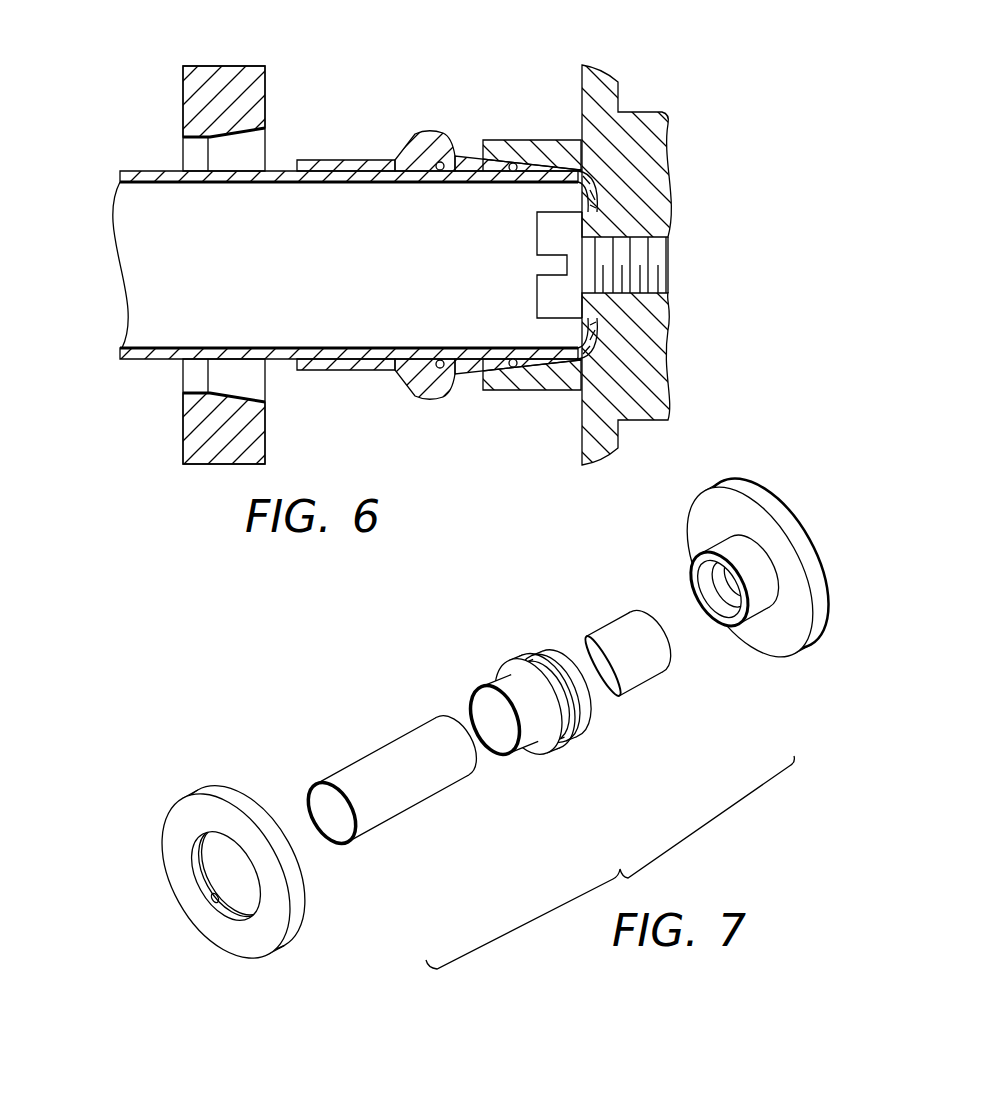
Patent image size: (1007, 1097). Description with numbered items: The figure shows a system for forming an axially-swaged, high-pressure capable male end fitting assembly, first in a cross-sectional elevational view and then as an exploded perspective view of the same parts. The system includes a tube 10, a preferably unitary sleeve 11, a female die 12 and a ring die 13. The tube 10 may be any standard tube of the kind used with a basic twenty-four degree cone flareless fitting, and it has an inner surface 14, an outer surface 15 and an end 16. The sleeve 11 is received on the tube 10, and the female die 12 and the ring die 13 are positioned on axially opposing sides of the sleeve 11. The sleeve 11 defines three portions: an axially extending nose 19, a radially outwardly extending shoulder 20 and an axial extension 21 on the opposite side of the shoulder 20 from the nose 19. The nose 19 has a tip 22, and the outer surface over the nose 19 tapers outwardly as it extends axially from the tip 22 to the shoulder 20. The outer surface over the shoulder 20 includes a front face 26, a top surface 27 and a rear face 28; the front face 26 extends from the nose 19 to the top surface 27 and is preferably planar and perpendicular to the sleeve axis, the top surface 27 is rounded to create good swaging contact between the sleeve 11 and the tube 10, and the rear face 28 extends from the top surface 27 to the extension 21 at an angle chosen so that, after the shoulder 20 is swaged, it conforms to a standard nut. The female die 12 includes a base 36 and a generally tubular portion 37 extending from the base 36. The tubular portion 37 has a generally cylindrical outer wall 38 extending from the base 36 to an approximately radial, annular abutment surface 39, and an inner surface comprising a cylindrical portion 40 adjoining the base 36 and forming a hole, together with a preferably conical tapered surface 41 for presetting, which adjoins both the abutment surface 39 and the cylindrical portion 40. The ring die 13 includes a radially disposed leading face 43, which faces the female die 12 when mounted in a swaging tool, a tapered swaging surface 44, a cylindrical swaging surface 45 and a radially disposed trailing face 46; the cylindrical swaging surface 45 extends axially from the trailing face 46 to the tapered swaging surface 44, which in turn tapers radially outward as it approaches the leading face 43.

In FIG. 6, the tube 10 is at (106, 215).
In FIG. 7, the tube 10 is at (398, 818).
In FIG. 6, the sleeve 11 is at (400, 150).
In FIG. 7, the sleeve 11 is at (536, 757).
In FIG. 6, the female die 12 is at (655, 104).
In FIG. 7, the female die 12 is at (708, 492).
In FIG. 6, the ring die 13 is at (214, 60).
In FIG. 7, the ring die 13 is at (181, 780).
In FIG. 6, the inner surface 14 is at (150, 346).
In FIG. 7, the inner surface 14 is at (315, 802).
In FIG. 6, the outer surface 15 is at (152, 362).
In FIG. 7, the outer surface 15 is at (386, 747).
In FIG. 6, the end 16 is at (572, 198).
In FIG. 7, the end 16 is at (652, 605).
In FIG. 6, the nose 19 is at (466, 160).
In FIG. 7, the nose 19 is at (541, 660).
In FIG. 6, the shoulder 20 is at (430, 142).
In FIG. 7, the shoulder 20 is at (508, 667).
In FIG. 6, the axial extension 21 is at (326, 160).
In FIG. 7, the axial extension 21 is at (496, 678).
In FIG. 6, the tip 22 is at (522, 165).
In FIG. 7, the tip 22 is at (580, 706).
In FIG. 6, the front face 26 is at (458, 378).
In FIG. 6, the top surface 27 is at (432, 400).
In FIG. 6, the rear face 28 is at (395, 375).
In FIG. 7, the base 36 is at (786, 648).
In FIG. 7, the tubular portion 37 is at (775, 562).
In FIG. 7, the outer wall 38 is at (746, 530).
In FIG. 7, the abutment surface 39 is at (692, 577).
In FIG. 7, the cylindrical portion 40 is at (736, 596).
In FIG. 6, the tapered surface 41 is at (527, 350).
In FIG. 7, the tapered surface 41 is at (708, 597).
In FIG. 7, the leading face 43 is at (232, 787).
In FIG. 7, the tapered swaging surface 44 is at (208, 870).
In FIG. 7, the cylindrical swaging surface 45 is at (220, 905).
In FIG. 7, the trailing face 46 is at (262, 937).